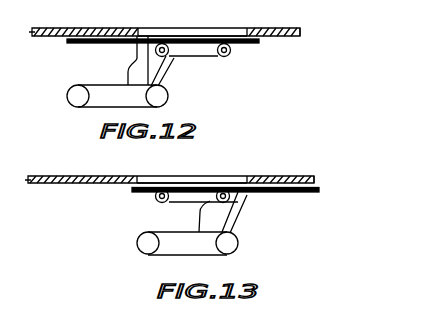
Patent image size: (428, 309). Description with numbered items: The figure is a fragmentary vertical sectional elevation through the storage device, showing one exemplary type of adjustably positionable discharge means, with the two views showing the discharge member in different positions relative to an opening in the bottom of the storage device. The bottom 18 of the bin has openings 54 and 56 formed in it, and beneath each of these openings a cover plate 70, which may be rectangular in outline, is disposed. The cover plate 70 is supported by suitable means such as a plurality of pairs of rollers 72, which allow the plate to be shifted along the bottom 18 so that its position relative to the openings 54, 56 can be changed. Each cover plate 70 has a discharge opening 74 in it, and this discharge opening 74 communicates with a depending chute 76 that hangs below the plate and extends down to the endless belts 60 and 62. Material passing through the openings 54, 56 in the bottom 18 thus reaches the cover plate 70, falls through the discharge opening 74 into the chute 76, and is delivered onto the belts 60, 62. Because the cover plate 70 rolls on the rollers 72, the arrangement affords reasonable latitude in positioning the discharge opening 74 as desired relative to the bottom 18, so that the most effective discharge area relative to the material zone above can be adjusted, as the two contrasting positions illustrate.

In FIG. 12, the bottom 18 is at (296, 33).
In FIG. 13, the bottom 18 is at (316, 180).
In FIG. 12, the opening 54 is at (247, 28).
In FIG. 13, the opening 54 is at (246, 176).
In FIG. 12, the opening 56 is at (241, 26).
In FIG. 13, the opening 56 is at (239, 165).
In FIG. 12, the endless belt 60 is at (77, 97).
In FIG. 13, the endless belt 60 is at (157, 255).
In FIG. 12, the endless belt 62 is at (91, 98).
In FIG. 13, the endless belt 62 is at (155, 253).
In FIG. 12, the cover plate 70 is at (89, 43).
In FIG. 13, the cover plate 70 is at (132, 187).
In FIG. 12, the rollers 72 is at (230, 54).
In FIG. 13, the rollers 72 is at (232, 206).
In FIG. 12, the discharge opening 74 is at (147, 46).
In FIG. 13, the discharge opening 74 is at (212, 199).
In FIG. 12, the depending chute 76 is at (163, 64).
In FIG. 13, the depending chute 76 is at (230, 227).